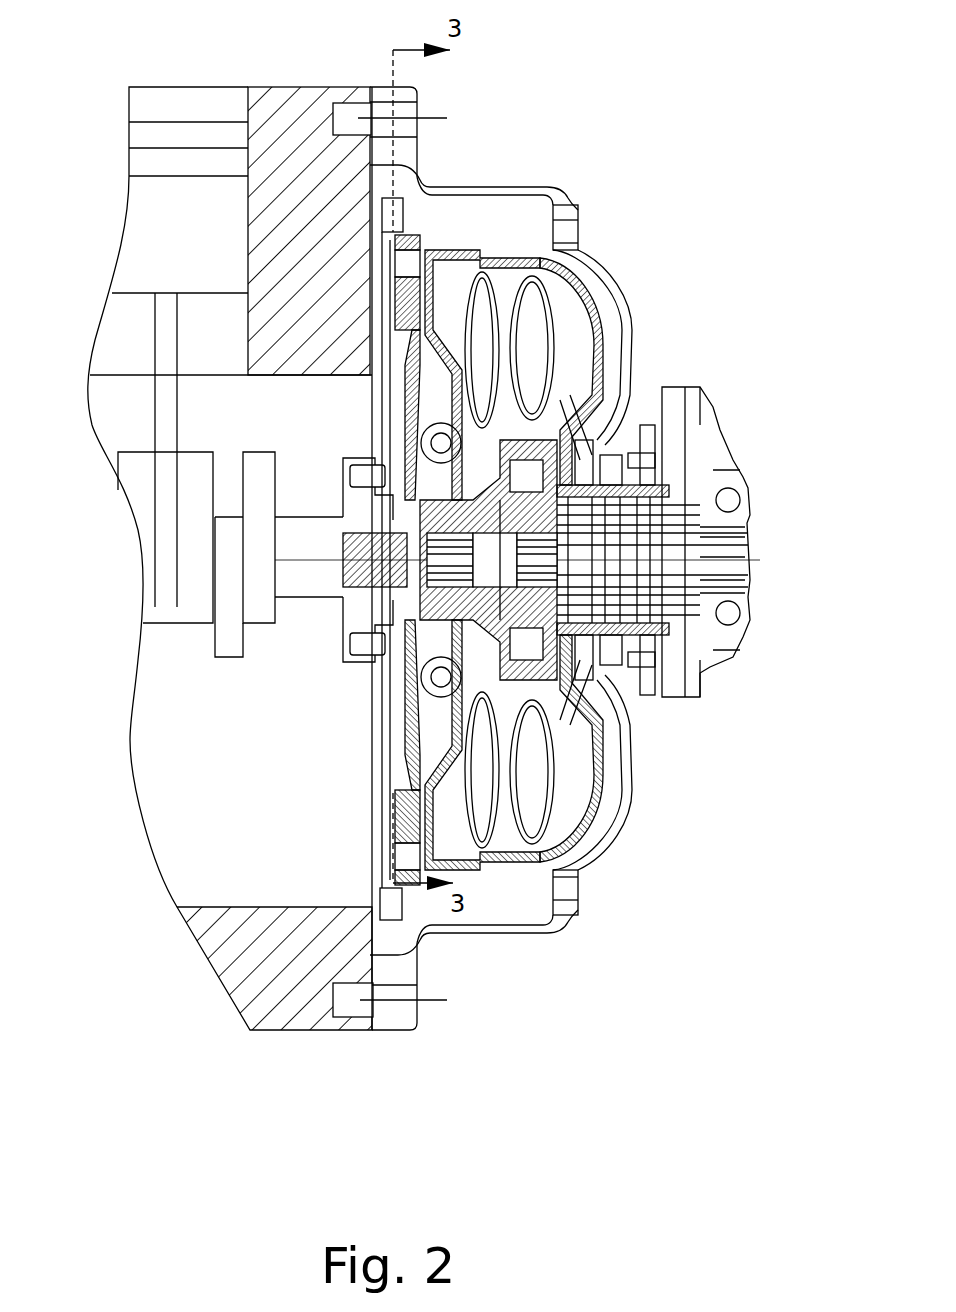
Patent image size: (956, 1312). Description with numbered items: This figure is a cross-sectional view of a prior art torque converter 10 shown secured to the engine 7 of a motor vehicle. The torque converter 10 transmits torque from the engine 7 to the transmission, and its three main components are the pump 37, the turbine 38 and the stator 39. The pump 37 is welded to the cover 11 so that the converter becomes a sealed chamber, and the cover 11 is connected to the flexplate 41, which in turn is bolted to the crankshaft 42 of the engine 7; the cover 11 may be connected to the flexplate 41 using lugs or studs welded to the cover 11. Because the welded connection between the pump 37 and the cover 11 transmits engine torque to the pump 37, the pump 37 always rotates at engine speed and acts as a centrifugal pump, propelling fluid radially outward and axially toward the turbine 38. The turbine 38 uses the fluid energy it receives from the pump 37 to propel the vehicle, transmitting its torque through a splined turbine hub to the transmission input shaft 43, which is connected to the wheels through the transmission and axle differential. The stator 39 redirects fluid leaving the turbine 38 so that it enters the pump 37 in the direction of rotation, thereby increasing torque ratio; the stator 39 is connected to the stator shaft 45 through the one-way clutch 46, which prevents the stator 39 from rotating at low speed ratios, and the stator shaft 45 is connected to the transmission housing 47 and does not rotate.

The engine 7 is at (385, 938).
The torque converter 10 is at (595, 300).
The cover 11 is at (390, 410).
The pump 37 is at (597, 815).
The turbine 38 is at (470, 817).
The stator 39 is at (493, 728).
The flexplate 41 is at (390, 702).
The crankshaft 42 is at (328, 615).
The transmission input shaft 43 is at (688, 577).
The stator shaft 45 is at (692, 497).
The one-way clutch 46 is at (575, 668).
The transmission housing 47 is at (642, 343).